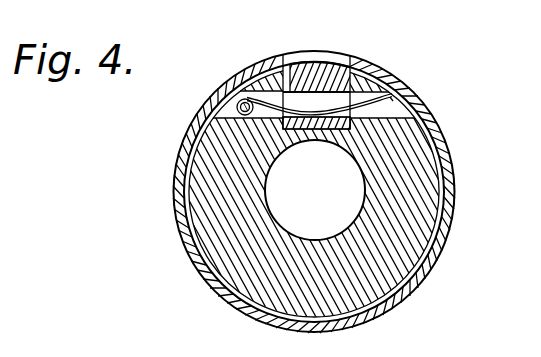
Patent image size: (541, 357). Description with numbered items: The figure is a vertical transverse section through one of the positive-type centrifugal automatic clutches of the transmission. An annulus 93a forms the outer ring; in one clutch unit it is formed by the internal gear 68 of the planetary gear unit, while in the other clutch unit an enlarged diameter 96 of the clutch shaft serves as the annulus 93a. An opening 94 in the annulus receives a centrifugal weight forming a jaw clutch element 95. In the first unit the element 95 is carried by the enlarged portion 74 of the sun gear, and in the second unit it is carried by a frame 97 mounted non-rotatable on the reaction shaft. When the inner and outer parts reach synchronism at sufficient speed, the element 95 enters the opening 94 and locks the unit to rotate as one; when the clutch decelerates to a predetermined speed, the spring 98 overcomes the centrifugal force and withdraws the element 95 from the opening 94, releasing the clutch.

The annulus 93a is at (428, 115).
The frame 97 is at (457, 223).
The enlarged portion of the sun gear 74 is at (390, 248).
The opening 94 is at (335, 58).
The jaw clutch element 95 is at (313, 78).
The internal gear 68 is at (378, 40).
The enlarged diameter of the clutch shaft 96 is at (344, 58).
The spring 98 is at (364, 104).